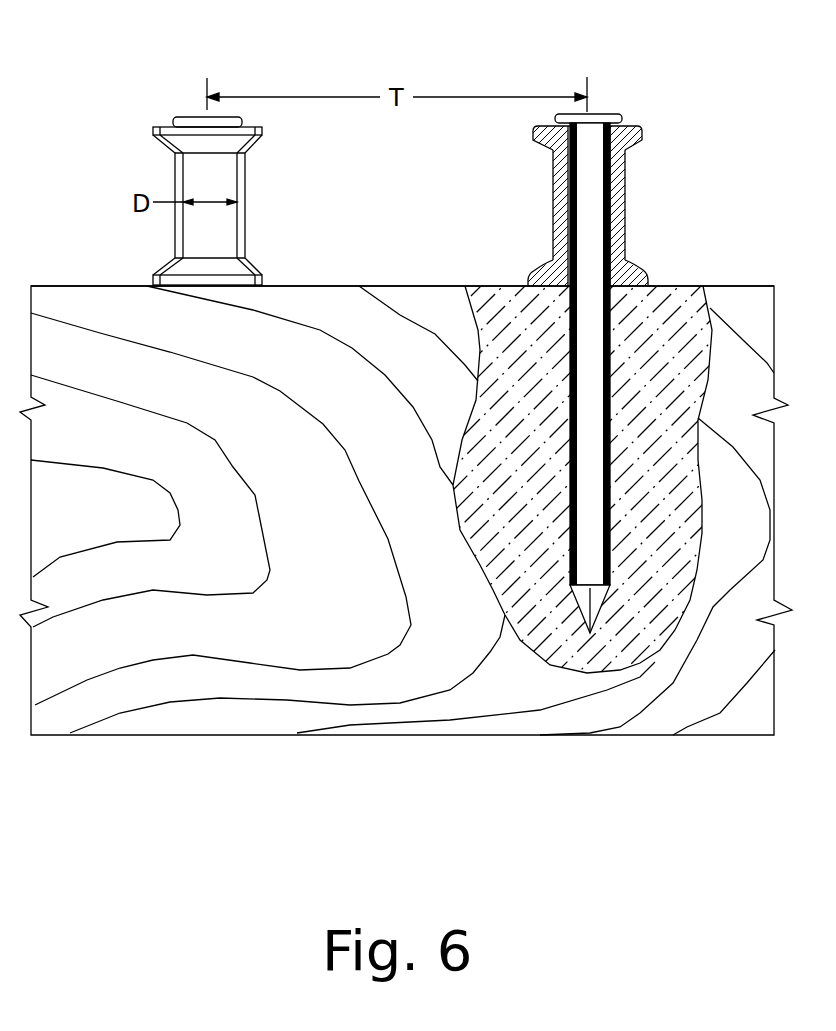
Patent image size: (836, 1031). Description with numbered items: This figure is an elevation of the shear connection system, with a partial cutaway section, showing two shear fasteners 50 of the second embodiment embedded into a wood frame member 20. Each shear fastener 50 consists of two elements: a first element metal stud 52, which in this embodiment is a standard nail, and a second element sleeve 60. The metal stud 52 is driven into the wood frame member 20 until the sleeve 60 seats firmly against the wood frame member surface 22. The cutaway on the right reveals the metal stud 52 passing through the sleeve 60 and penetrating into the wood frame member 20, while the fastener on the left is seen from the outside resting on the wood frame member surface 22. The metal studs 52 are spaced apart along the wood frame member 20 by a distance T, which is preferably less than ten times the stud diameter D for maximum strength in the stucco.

The wood frame member 20 is at (406, 551).
The wood frame member surface 22 is at (402, 250).
The shear fastener 50 is at (120, 42).
The metal stud 52 is at (450, 464).
The sleeve 60 is at (593, 205).